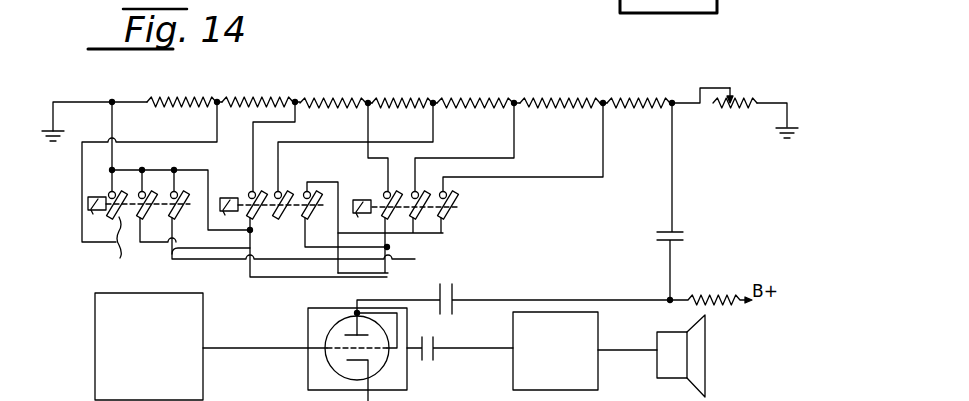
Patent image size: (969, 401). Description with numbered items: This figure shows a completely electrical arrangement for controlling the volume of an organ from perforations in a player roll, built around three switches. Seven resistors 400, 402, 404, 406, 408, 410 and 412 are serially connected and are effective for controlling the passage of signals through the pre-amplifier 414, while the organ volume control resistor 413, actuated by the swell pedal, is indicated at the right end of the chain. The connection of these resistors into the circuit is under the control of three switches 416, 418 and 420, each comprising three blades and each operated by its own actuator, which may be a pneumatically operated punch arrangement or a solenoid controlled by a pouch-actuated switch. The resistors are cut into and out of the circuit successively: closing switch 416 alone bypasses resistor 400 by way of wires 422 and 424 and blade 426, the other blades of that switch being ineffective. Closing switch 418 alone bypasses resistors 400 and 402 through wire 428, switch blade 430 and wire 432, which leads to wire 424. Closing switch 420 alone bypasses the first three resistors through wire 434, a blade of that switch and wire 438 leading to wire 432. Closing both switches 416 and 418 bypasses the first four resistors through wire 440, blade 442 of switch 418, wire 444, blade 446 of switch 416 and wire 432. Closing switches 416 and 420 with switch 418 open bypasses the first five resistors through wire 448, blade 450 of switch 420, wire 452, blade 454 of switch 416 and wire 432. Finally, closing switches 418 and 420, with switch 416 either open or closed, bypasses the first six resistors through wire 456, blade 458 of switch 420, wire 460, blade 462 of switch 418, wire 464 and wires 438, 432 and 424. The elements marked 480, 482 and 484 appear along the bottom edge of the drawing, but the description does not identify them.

The resistor 400 is at (197, 86).
The resistor 402 is at (277, 88).
The resistor 404 is at (354, 86).
The resistor 406 is at (425, 86).
The resistor 408 is at (486, 86).
The resistor 410 is at (573, 86).
The resistor 412 is at (643, 86).
The organ volume control resistor 413 is at (736, 105).
The pre-amplifier 414 is at (296, 380).
The switch 416 is at (114, 246).
The switch 418 is at (299, 183).
The switch 420 is at (470, 194).
The wire 422 is at (205, 133).
The wire 424 is at (113, 120).
The blade 426 is at (167, 256).
The wire 428 is at (296, 118).
The switch blade 430 is at (247, 278).
The wire 432 is at (214, 232).
The wire 434 is at (372, 122).
The wire 438 is at (388, 273).
The wire 440 is at (434, 122).
The blade 442 is at (288, 218).
The wire 444 is at (174, 260).
The blade 446 is at (151, 190).
The wire 448 is at (518, 132).
The blade 450 is at (418, 219).
The wire 452 is at (415, 262).
The blade 454 is at (188, 193).
The wire 456 is at (400, 193).
The blade 458 is at (455, 210).
The wire 460 is at (443, 233).
The blade 462 is at (332, 193).
The wire 464 is at (340, 276).
The block 480 is at (120, 347).
The block 482 is at (250, 396).
The block 484 is at (330, 396).